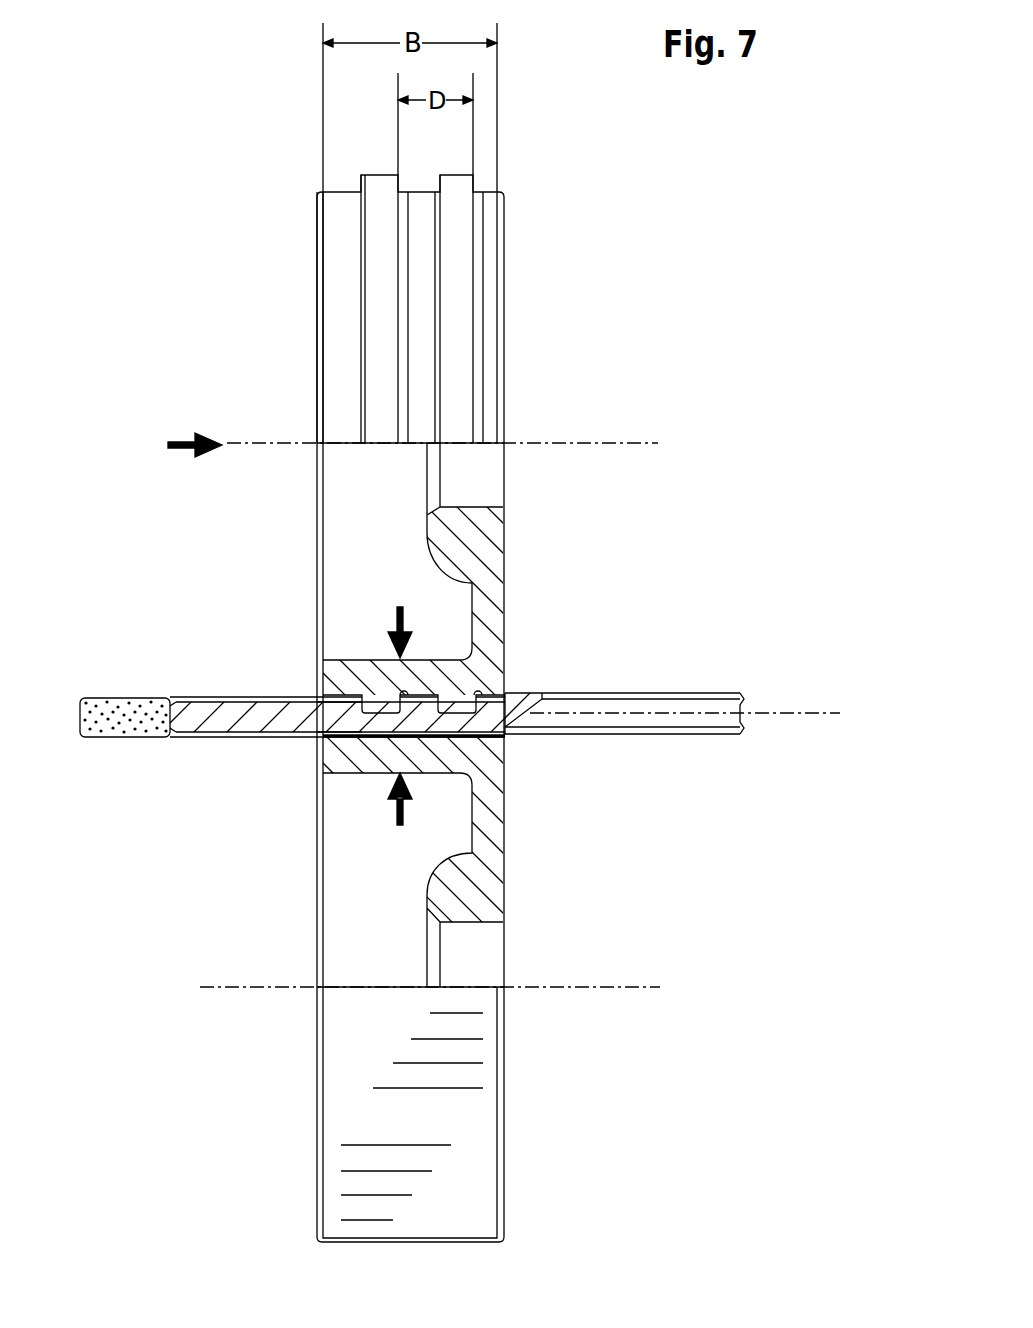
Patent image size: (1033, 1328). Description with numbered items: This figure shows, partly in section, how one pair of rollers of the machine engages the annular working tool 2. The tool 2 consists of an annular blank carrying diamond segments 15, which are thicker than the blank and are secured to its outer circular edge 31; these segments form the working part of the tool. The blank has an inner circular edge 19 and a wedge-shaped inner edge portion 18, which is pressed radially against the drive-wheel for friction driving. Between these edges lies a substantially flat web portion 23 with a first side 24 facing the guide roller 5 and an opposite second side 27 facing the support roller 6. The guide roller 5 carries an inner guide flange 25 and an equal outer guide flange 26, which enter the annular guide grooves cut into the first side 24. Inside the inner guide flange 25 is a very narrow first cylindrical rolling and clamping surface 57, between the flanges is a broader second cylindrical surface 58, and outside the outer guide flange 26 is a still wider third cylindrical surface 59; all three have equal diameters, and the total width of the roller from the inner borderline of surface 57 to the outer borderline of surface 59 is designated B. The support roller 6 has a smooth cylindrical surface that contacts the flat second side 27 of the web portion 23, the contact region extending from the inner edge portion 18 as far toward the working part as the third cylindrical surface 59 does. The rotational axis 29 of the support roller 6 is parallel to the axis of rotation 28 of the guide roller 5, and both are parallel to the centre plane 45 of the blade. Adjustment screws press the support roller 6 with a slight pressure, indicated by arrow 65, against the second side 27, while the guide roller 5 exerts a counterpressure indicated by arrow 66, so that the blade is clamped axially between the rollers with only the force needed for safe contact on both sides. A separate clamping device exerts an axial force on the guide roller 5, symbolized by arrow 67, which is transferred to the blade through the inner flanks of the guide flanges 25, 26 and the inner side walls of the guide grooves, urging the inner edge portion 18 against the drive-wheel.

The working tool 2 is at (628, 693).
The guide roller 5 is at (506, 527).
The support roller 6 is at (506, 830).
The diamond segment 15 is at (132, 697).
The inner edge portion 18 is at (523, 693).
The inner circular edge 19 is at (725, 708).
The web portion 23 is at (317, 732).
The first side 24 is at (243, 697).
The inner guide flange 25 is at (457, 173).
The outer guide flange 26 is at (382, 173).
The second side 27 is at (243, 737).
The axis of rotation of guide roller 28 is at (612, 440).
The rotational axis of support roller 29 is at (612, 985).
The outer circular edge 31 is at (157, 717).
The centre plane 45 is at (827, 712).
The first cylindrical rolling and clamping surface 57 is at (492, 190).
The second cylindrical rolling and clamping surface 58 is at (420, 190).
The third cylindrical rolling and clamping surface 59 is at (330, 186).
The arrow indicating support roller pressure 65 is at (393, 818).
The arrow indicating guide roller counterpressure 66 is at (395, 628).
The arrow indicating clamping device force 67 is at (187, 442).